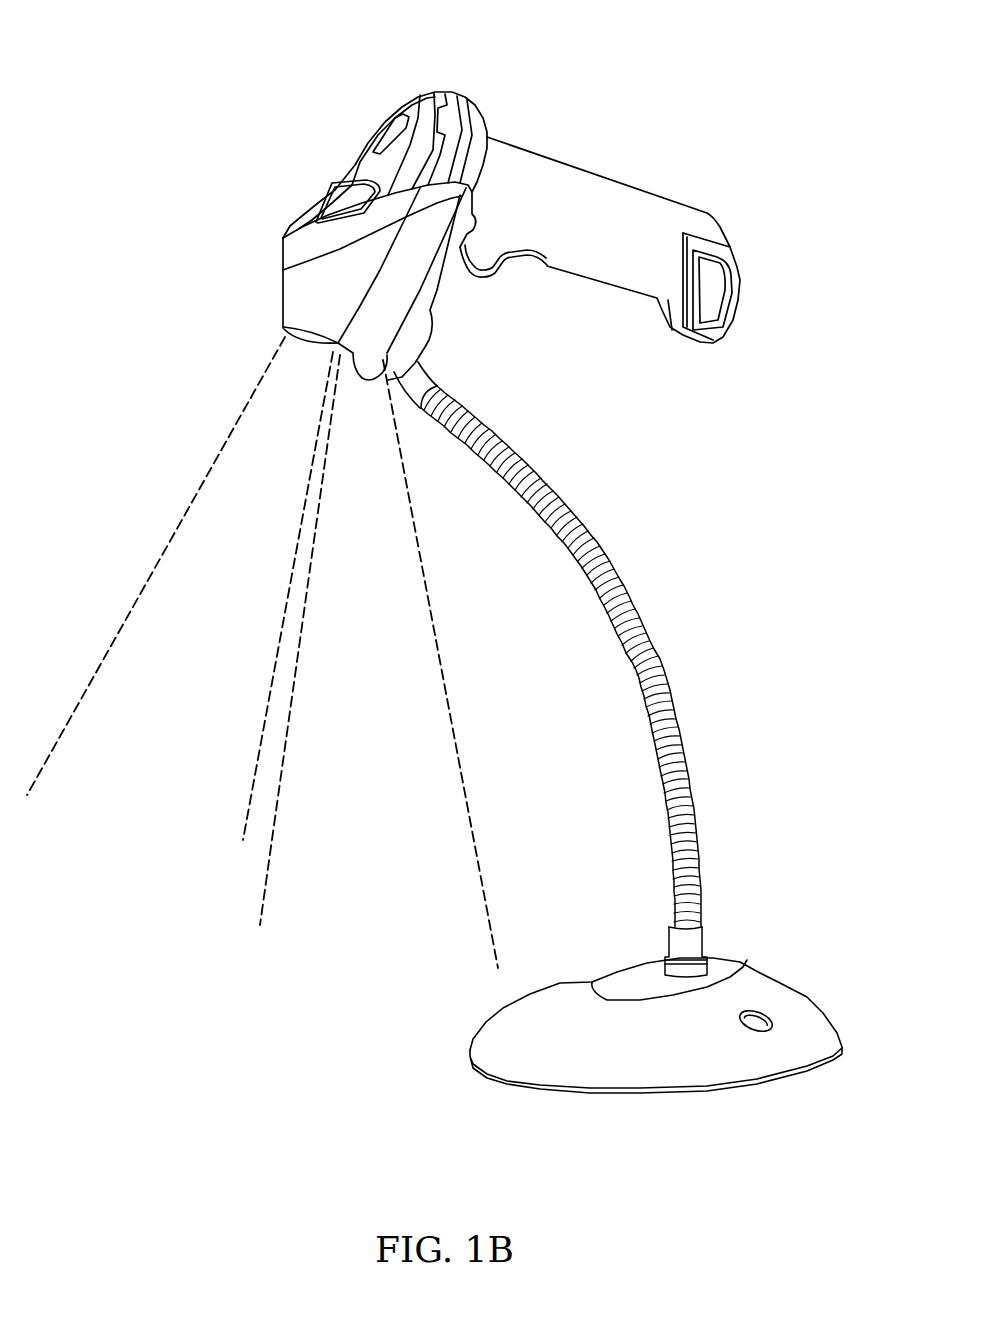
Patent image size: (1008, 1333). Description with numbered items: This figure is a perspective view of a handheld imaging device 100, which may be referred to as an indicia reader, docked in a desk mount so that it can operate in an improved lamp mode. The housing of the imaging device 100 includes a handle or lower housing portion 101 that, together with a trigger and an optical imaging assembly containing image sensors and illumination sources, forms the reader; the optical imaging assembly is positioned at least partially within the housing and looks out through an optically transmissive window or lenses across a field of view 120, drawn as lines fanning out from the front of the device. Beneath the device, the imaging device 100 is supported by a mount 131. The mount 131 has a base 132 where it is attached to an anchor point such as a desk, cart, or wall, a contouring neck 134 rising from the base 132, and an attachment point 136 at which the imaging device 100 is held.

The handheld imaging device 100 is at (201, 44).
The lower housing portion 101 is at (587, 280).
The field of view 120 is at (169, 551).
The mount 131 is at (827, 1013).
The base 132 is at (490, 1063).
The contouring neck 134 is at (700, 808).
The attachment point 136 is at (284, 330).